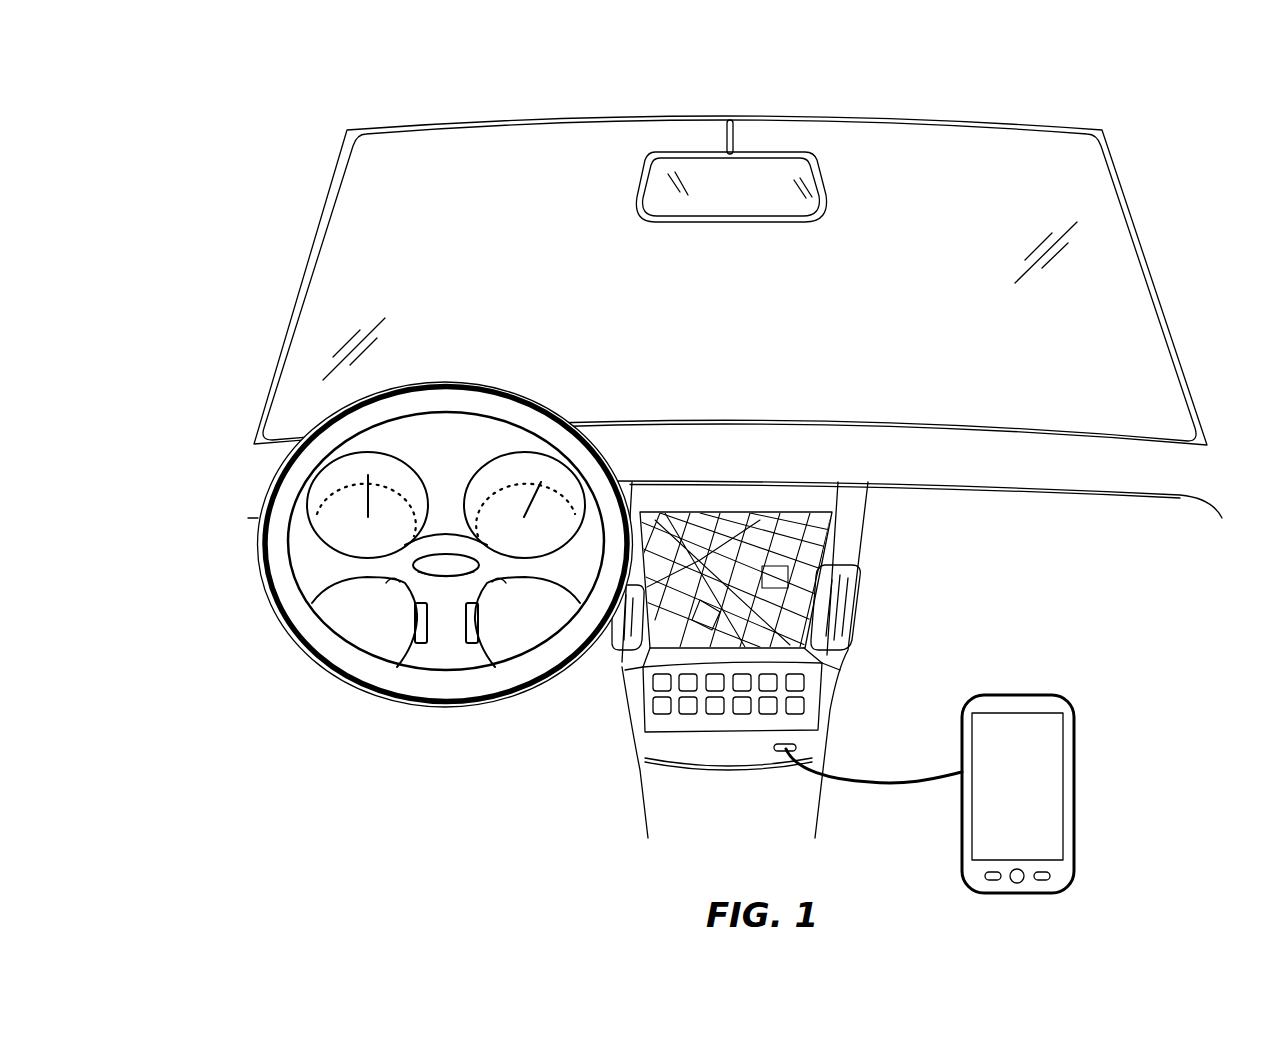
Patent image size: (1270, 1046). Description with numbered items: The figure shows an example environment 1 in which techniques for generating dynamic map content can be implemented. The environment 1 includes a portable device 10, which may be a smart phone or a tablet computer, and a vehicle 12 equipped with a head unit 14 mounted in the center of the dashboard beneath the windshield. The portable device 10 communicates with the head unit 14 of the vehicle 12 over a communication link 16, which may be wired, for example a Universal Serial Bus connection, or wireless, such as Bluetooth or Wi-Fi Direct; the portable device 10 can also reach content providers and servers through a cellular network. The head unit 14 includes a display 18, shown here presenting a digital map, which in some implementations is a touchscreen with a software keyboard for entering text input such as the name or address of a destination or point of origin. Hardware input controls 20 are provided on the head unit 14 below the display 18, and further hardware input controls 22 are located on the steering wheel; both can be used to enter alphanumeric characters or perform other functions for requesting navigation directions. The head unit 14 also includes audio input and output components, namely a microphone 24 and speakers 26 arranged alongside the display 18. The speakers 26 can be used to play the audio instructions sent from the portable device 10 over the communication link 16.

The environment 1 is at (449, 71).
The portable device 10 is at (1022, 694).
The vehicle 12 is at (250, 409).
The head unit 14 is at (778, 472).
The communication link 16 is at (874, 767).
The display 18 is at (816, 536).
The hardware input controls 20 is at (653, 692).
The hardware input controls 22 is at (408, 629).
The microphone 24 is at (616, 633).
The speakers 26 is at (846, 605).